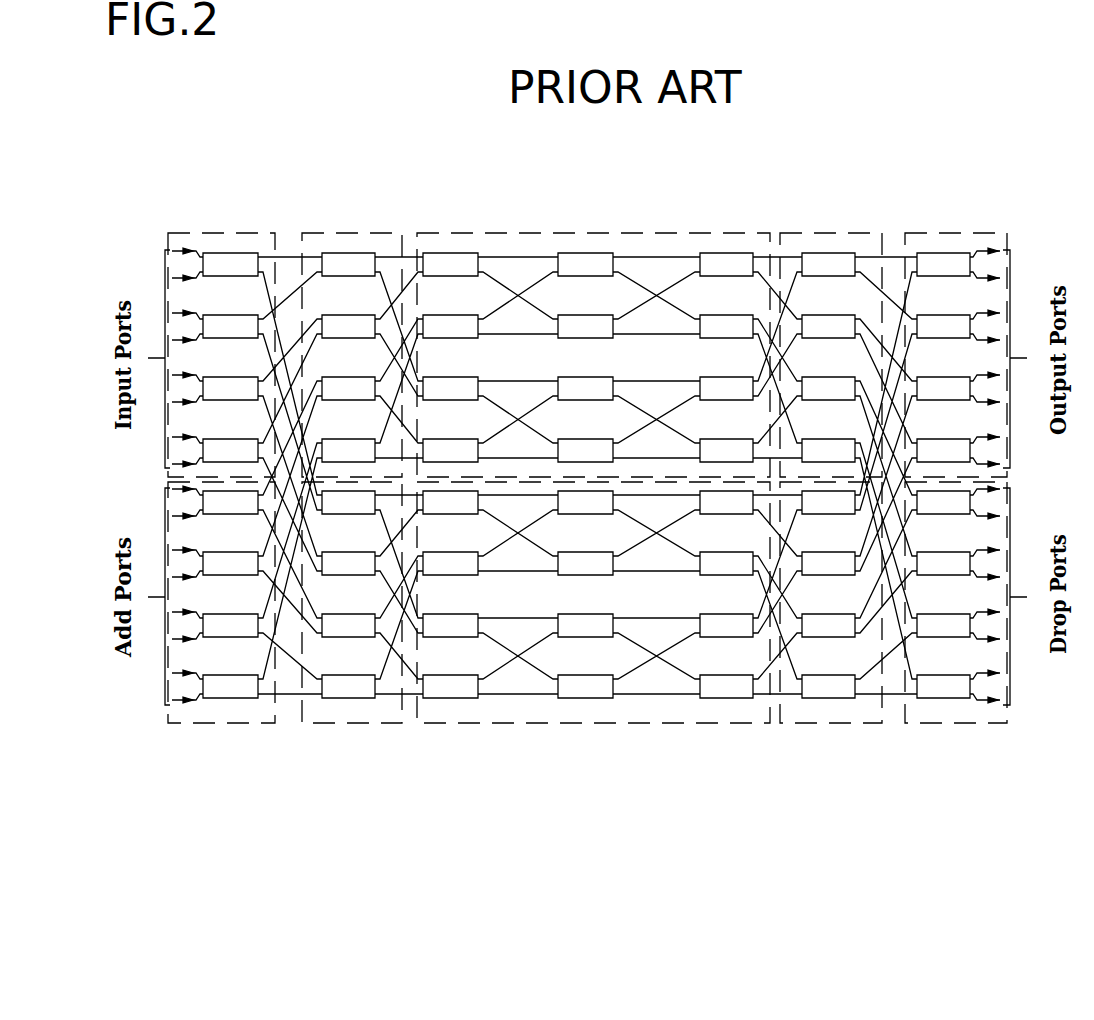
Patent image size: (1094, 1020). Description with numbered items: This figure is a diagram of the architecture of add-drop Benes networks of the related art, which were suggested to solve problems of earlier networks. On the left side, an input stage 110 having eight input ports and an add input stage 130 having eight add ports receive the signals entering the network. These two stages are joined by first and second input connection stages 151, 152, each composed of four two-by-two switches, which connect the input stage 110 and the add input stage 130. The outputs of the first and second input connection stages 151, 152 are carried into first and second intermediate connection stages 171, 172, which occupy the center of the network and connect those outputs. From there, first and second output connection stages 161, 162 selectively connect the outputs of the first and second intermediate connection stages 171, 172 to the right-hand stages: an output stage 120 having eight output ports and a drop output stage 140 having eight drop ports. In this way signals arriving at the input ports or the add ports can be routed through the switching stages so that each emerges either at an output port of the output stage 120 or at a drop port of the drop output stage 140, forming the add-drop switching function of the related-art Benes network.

The input stage 110 is at (216, 232).
The add input stage 130 is at (219, 724).
The first input connection stage 151 is at (349, 232).
The second input connection stage 152 is at (347, 724).
The first intermediate connection stage 171 is at (620, 232).
The second intermediate connection stage 172 is at (620, 724).
The first output connection stage 161 is at (827, 232).
The second output connection stage 162 is at (827, 724).
The output stage 120 is at (951, 232).
The drop output stage 140 is at (950, 724).